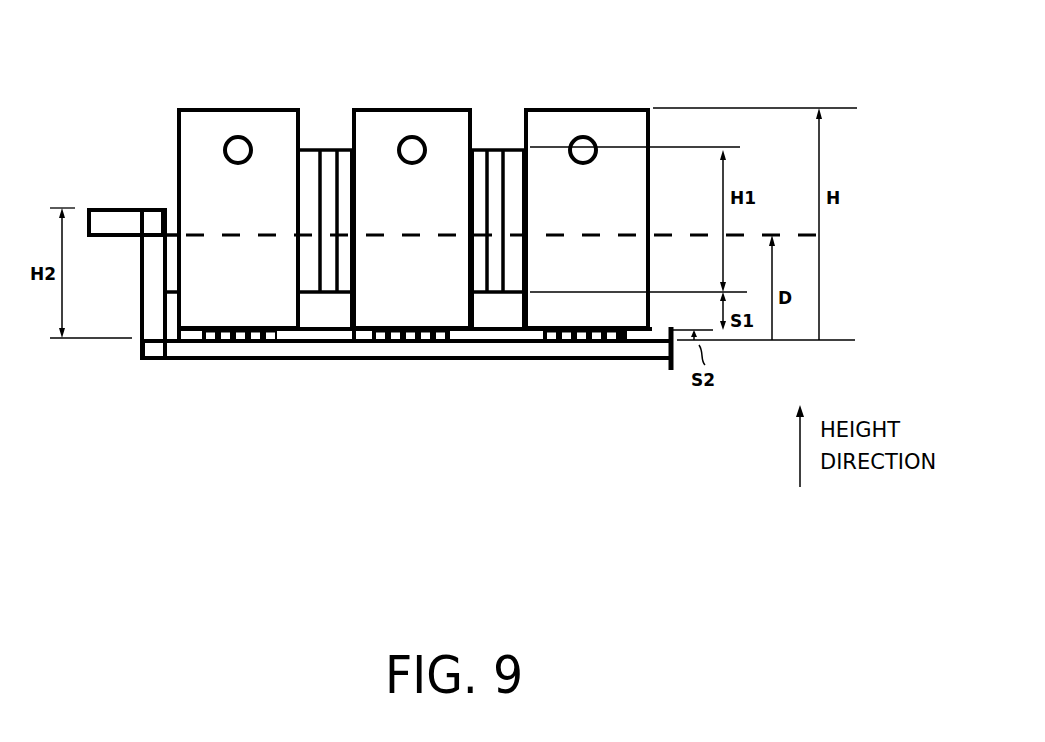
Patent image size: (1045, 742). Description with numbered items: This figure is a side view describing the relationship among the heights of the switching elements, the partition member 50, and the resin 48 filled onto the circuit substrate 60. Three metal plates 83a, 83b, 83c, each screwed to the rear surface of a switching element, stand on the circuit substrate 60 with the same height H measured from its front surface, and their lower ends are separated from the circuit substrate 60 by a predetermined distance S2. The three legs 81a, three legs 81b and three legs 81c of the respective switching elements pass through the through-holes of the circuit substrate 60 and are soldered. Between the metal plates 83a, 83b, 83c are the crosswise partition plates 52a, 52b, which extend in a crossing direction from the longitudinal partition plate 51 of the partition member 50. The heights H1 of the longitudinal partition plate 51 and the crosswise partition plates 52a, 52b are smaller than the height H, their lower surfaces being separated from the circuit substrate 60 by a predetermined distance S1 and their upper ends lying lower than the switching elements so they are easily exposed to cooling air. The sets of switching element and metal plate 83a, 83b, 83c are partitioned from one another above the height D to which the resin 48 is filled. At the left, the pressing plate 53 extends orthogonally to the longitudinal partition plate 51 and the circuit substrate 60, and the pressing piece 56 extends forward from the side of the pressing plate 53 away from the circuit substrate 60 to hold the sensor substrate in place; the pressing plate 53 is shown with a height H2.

The partition member 50 is at (84, 191).
The pressing piece 56 is at (123, 222).
The pressing plate 53 is at (148, 292).
The circuit substrate 60 is at (330, 353).
The metal plate 83a is at (205, 125).
The metal plate 83b is at (379, 128).
The metal plate 83c is at (612, 125).
The crosswise partition plate 52a is at (328, 157).
The crosswise partition plate 52b is at (492, 157).
The longitudinal partition plate 51 is at (513, 157).
The resin 48 is at (665, 233).
The legs 81a is at (266, 340).
The legs 81b is at (382, 340).
The legs 81c is at (553, 340).